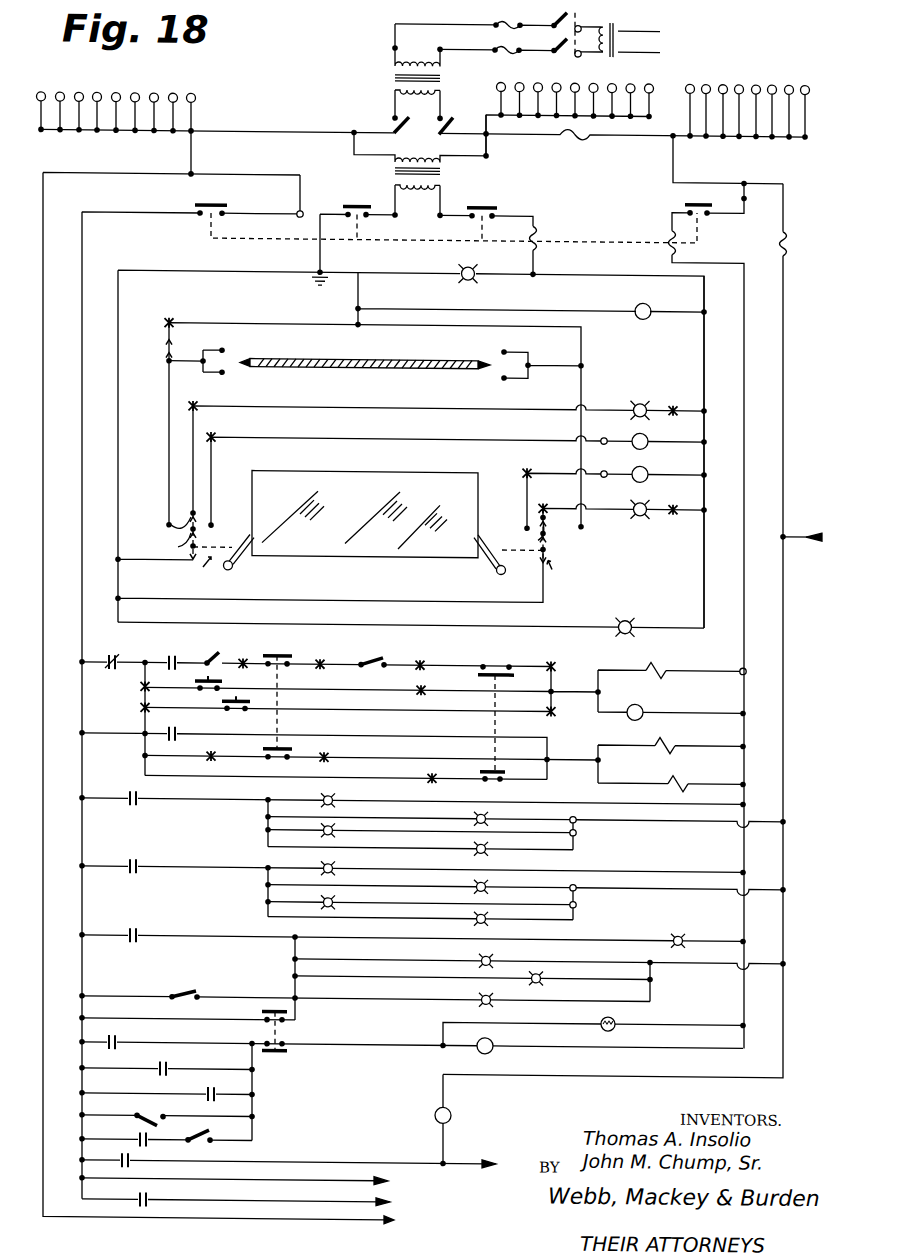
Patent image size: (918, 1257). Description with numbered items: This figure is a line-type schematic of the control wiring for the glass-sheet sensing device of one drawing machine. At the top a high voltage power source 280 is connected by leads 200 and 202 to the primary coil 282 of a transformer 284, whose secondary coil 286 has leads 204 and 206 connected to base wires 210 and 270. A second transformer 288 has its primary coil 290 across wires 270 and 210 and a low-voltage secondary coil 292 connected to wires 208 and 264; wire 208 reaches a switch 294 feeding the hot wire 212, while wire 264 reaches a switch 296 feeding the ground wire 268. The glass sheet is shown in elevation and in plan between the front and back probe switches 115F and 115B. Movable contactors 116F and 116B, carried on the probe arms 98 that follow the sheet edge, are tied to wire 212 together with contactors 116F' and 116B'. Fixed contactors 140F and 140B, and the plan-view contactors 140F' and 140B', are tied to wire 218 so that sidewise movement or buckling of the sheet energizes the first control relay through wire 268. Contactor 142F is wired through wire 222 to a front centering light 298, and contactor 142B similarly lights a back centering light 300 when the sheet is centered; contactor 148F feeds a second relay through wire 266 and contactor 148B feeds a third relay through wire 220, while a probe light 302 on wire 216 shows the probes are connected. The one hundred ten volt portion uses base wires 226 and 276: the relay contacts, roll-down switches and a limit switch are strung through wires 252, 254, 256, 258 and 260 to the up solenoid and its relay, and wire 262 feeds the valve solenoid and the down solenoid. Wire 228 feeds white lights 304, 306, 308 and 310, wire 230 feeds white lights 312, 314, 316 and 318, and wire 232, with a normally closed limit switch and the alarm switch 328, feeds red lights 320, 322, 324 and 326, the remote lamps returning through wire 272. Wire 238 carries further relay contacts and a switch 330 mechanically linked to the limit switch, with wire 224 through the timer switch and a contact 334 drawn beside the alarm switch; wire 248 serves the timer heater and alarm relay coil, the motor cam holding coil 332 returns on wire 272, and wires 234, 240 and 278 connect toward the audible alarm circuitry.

The probe arm 98 is at (232, 559).
The back probe switch 115B is at (589, 580).
The front probe switch 115F is at (220, 580).
The back movable contactor 116B is at (516, 536).
The front movable contactor 116F is at (164, 544).
The back plan-view movable contactor 116B' is at (519, 357).
The front plan-view movable contactor 116F' is at (216, 357).
The back fixed contactor 140B is at (612, 527).
The front fixed contactor 140F is at (156, 518).
The back plan-view fixed contactor 140B' is at (534, 368).
The front plan-view fixed contactor 140F' is at (201, 364).
The back centering contactor 142B is at (549, 537).
The front centering contactor 142F is at (214, 534).
The back fixed contactor 148B is at (526, 522).
The front fixed contactor 148F is at (213, 522).
The lead 200 is at (433, 21).
The lead 202 is at (455, 45).
The secondary coil lead 204 is at (394, 116).
The secondary coil lead 206 is at (440, 112).
The wire 208 is at (395, 204).
The base wire 210 is at (283, 130).
The hot wire 212 is at (191, 267).
The wire 216 is at (374, 623).
The wire 218 is at (560, 305).
The wire 220 is at (560, 468).
The wire 222 is at (391, 405).
The wire 224 is at (203, 1158).
The base wire 226 is at (82, 253).
The wire 228 is at (201, 798).
The wire 230 is at (246, 868).
The wire 232 is at (246, 938).
The wire 234 is at (251, 1204).
The wire 238 is at (257, 1113).
The wire 240 is at (351, 1162).
The wire 248 is at (369, 1044).
The wire 252 is at (145, 680).
The wire 254 is at (222, 652).
The wire 256 is at (323, 654).
The wire 258 is at (424, 654).
The wire 260 is at (548, 679).
The wire 262 is at (622, 739).
The wire 264 is at (442, 199).
The wire 266 is at (395, 435).
The ground wire 268 is at (574, 271).
The base wire 270 is at (617, 137).
The wire 272 is at (783, 336).
The base wire 276 is at (743, 639).
The wire 278 is at (801, 528).
The high voltage power source 280 is at (557, 34).
The primary coil 282 is at (396, 58).
The transformer 284 is at (441, 72).
The secondary coil 286 is at (394, 94).
The transformer 288 is at (457, 171).
The primary coil 290 is at (421, 138).
The secondary coil 292 is at (417, 199).
The switch 294 is at (348, 210).
The switch 296 is at (497, 211).
The centering light 298 is at (640, 396).
The back centering light 300 is at (644, 502).
The probe light 302 is at (630, 621).
The indicator light 304 is at (335, 796).
The indicator light 306 is at (482, 818).
The indicator light 308 is at (332, 832).
The indicator light 310 is at (481, 850).
The indicator light 312 is at (330, 869).
The indicator light 314 is at (475, 884).
The indicator light 316 is at (329, 904).
The indicator light 318 is at (475, 918).
The red indicator light 320 is at (683, 938).
The red indicator light 322 is at (483, 957).
The red indicator light 324 is at (536, 979).
The red indicator light 326 is at (483, 999).
The alarm switch 328 is at (261, 1013).
The normally open switch 330 is at (159, 1119).
The motor cam holding coil 332 is at (434, 1110).
The push button contact 334 is at (281, 1049).